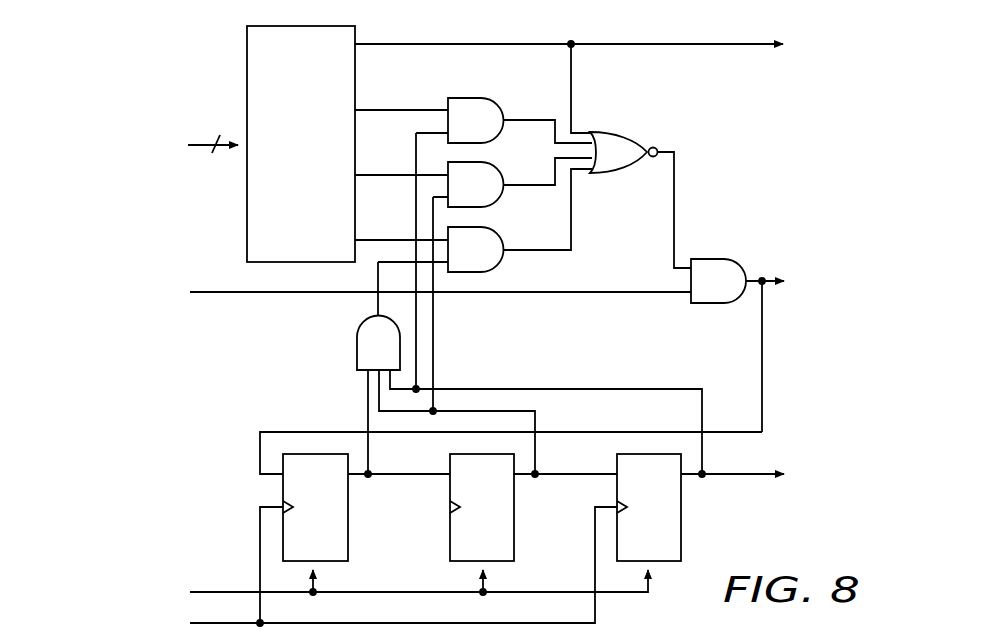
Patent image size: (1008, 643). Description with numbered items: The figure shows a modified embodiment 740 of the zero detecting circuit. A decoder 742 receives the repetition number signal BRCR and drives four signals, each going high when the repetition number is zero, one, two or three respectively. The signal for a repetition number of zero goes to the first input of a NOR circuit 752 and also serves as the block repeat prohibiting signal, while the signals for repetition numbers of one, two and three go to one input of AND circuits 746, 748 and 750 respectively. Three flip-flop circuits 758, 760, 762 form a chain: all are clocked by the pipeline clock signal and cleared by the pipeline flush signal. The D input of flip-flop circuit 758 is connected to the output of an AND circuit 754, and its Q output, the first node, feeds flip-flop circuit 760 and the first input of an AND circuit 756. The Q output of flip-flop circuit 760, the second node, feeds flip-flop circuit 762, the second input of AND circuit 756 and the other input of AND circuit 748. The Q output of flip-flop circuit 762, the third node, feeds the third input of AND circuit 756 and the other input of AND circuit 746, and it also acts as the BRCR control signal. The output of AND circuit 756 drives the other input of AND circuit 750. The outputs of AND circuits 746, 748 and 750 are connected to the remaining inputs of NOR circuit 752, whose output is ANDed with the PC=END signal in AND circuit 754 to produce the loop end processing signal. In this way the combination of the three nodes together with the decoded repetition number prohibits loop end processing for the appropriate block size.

The modified embodiment of detecting circuit 740 is at (120, 72).
The decoder 742 is at (281, 174).
The AND circuit 746 is at (492, 98).
The AND circuit 748 is at (523, 162).
The AND circuit 750 is at (500, 235).
The NOR circuit 752 is at (628, 131).
The AND circuit 754 is at (718, 259).
The AND circuit 756 is at (357, 340).
The flip-flop circuit 758 is at (349, 518).
The flip-flop circuit 760 is at (514, 518).
The flip-flop circuit 762 is at (682, 518).